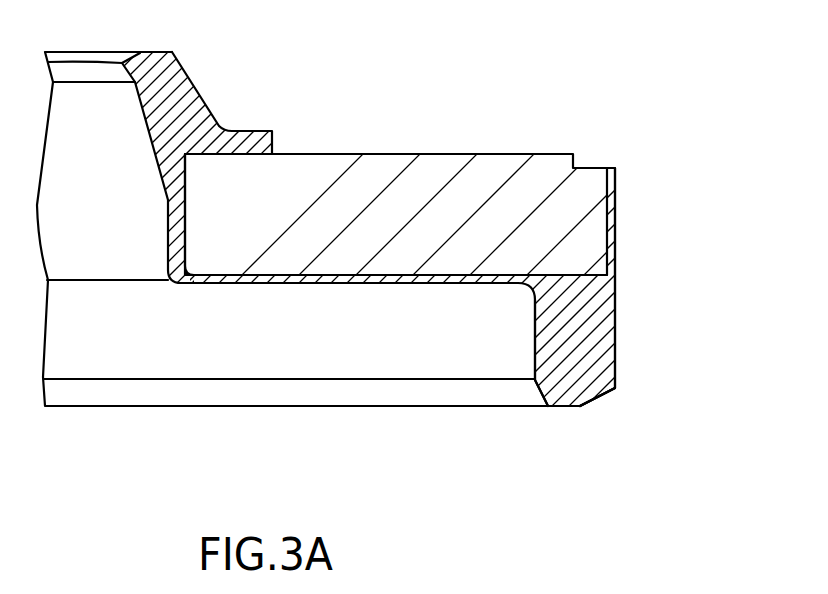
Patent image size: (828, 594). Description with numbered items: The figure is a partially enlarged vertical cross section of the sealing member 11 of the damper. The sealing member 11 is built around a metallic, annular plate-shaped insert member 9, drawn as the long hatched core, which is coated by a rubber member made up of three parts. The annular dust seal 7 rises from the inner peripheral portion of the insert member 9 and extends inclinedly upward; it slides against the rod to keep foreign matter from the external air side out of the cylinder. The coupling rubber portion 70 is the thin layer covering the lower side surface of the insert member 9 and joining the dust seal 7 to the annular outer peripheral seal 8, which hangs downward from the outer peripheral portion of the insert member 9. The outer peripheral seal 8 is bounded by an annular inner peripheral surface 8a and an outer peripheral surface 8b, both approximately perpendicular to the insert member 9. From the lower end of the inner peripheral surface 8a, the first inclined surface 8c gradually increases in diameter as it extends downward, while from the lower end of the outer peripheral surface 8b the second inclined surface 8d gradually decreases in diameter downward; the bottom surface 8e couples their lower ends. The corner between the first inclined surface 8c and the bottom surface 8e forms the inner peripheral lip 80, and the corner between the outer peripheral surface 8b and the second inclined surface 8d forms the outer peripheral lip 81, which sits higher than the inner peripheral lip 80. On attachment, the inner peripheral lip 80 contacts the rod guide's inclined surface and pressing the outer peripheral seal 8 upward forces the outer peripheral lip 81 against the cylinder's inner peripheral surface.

The dust seal 7 is at (208, 97).
The insert member 9 is at (430, 167).
The sealing member 11 is at (606, 108).
The coupling rubber portion 70 is at (342, 283).
The outer peripheral seal 8 is at (628, 343).
The inner peripheral surface 8a is at (535, 337).
The outer peripheral surface 8b is at (615, 320).
The first inclined surface 8c is at (535, 392).
The second inclined surface 8d is at (600, 397).
The bottom surface 8e is at (567, 410).
The inner peripheral lip 80 is at (548, 410).
The outer peripheral lip 81 is at (617, 387).